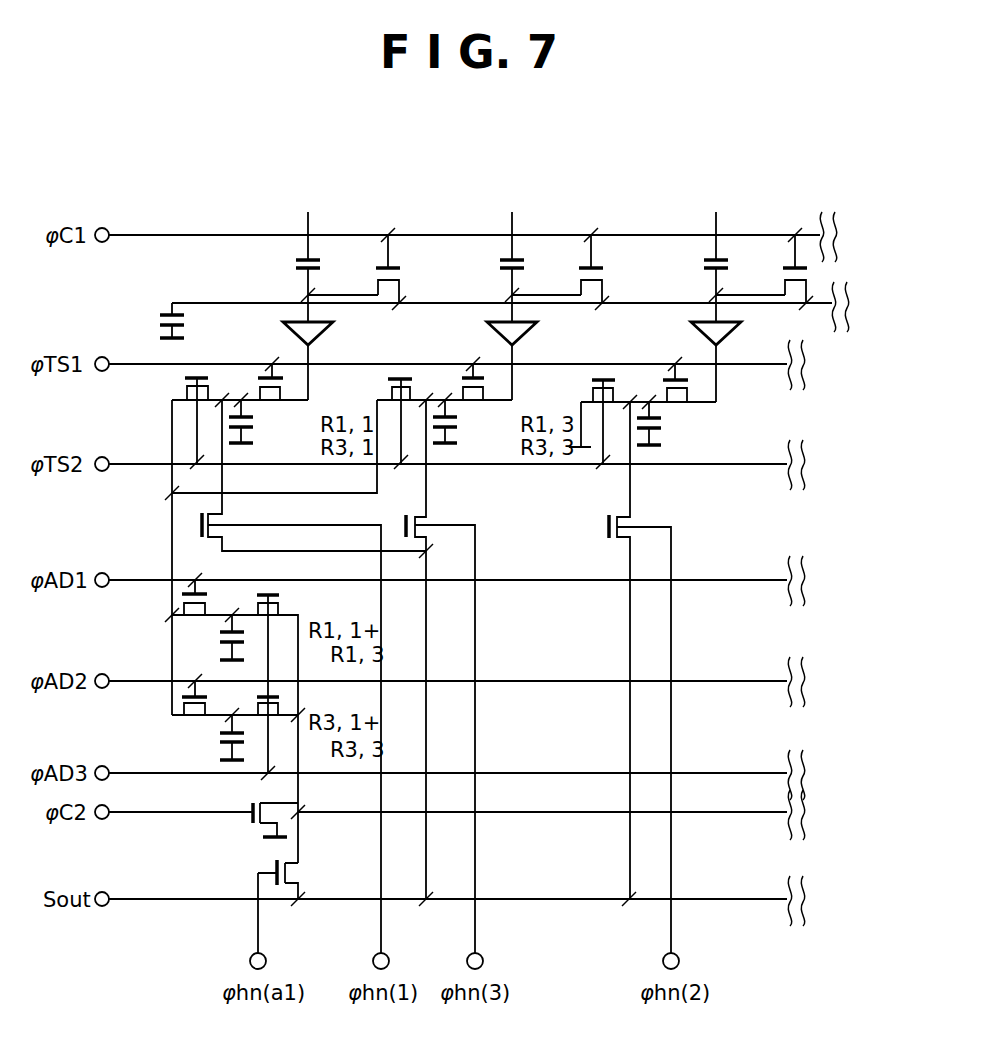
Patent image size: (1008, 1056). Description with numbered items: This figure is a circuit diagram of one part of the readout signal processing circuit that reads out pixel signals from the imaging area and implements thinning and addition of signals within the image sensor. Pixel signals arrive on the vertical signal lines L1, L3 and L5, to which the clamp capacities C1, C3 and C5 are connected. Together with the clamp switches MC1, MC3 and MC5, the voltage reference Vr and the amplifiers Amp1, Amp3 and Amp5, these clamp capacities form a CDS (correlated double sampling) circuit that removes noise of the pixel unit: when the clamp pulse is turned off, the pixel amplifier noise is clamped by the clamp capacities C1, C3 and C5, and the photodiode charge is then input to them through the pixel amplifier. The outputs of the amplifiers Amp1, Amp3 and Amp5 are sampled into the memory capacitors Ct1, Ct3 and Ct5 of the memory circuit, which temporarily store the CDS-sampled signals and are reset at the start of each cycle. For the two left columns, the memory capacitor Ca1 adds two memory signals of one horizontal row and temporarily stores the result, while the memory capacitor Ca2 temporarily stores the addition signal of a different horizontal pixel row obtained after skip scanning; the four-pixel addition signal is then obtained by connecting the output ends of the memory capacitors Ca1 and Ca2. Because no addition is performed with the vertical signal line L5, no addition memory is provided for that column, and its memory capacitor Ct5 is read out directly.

The vertical signal line L1 is at (309, 223).
The vertical signal line L3 is at (513, 223).
The vertical signal line L5 is at (717, 223).
The clamp capacity C1 is at (326, 269).
The clamp capacity C3 is at (530, 269).
The clamp capacity C5 is at (734, 269).
The clamp switch MC1 is at (413, 269).
The clamp switch MC3 is at (616, 269).
The clamp switch MC5 is at (812, 278).
The amplifier Amp1 is at (276, 328).
The amplifier Amp3 is at (480, 328).
The amplifier Amp5 is at (684, 328).
The memory capacitor Ct1 is at (262, 421).
The memory capacitor Ct3 is at (466, 421).
The memory capacitor Ct5 is at (679, 423).
The memory capacitor Ca1 is at (209, 634).
The memory capacitor Ca2 is at (209, 734).
The voltage reference Vr is at (157, 321).